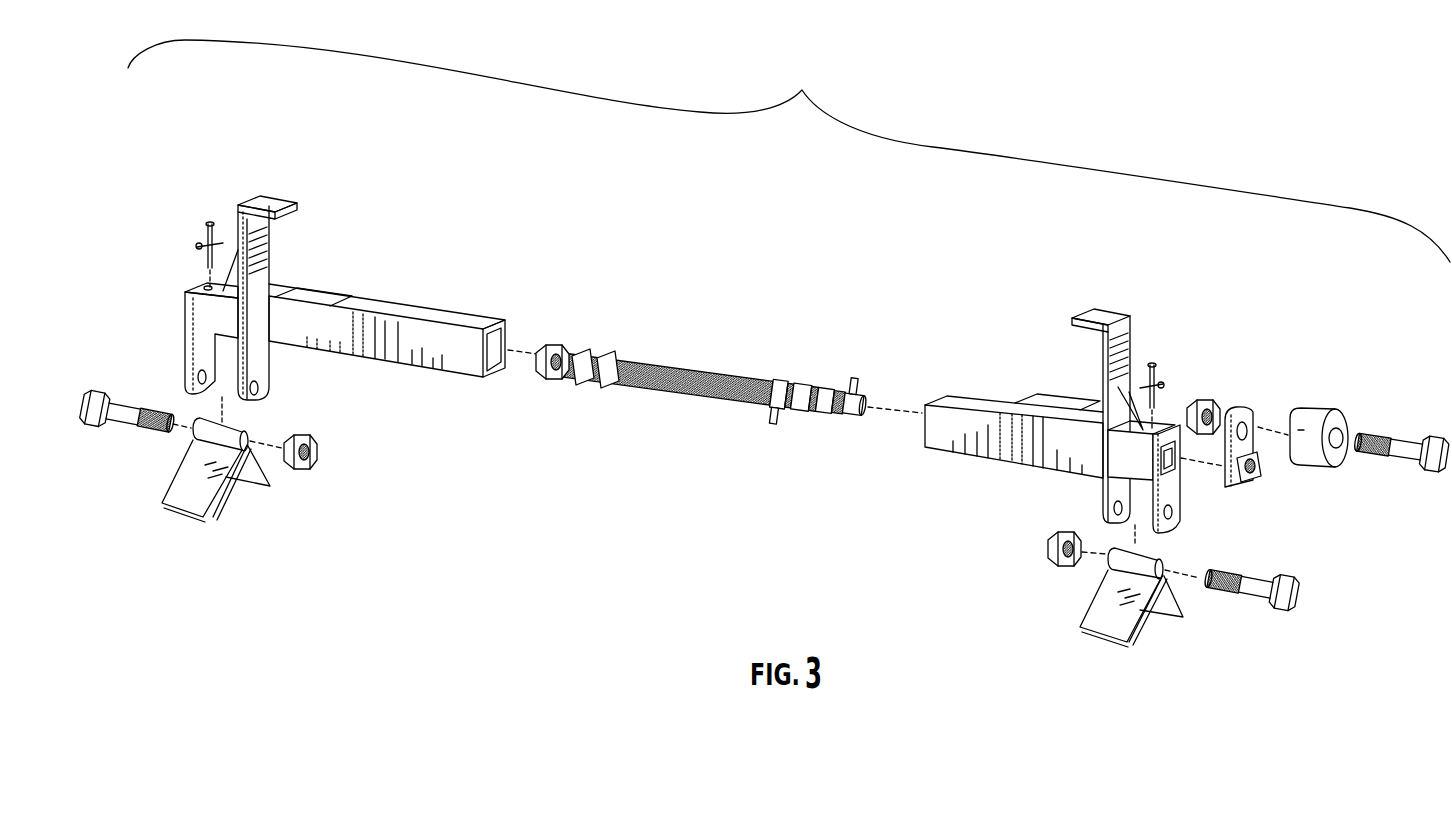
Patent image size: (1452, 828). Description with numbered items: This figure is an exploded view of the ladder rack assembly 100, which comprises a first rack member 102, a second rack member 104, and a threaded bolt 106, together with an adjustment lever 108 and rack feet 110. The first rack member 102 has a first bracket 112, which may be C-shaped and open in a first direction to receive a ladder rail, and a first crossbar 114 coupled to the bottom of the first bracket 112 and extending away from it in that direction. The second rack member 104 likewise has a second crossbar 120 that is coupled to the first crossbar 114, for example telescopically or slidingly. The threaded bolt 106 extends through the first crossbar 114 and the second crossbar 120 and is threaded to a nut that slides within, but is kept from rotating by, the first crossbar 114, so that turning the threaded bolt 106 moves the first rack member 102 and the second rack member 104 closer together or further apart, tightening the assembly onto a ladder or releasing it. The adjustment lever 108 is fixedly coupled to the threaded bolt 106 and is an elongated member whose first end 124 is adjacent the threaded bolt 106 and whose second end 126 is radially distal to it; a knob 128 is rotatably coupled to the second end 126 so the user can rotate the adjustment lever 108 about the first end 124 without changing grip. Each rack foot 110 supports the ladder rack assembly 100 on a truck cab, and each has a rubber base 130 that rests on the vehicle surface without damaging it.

The ladder rack assembly 100 is at (764, 378).
The first rack member 102 is at (388, 189).
The second rack member 104 is at (1028, 317).
The threaded bolt 106 is at (697, 378).
The adjustment lever 108 is at (1250, 389).
The rack foot 110 is at (230, 488).
The first bracket 112 is at (258, 249).
The first crossbar 114 is at (433, 345).
The second crossbar 120 is at (1007, 437).
The first end 124 is at (1248, 477).
The second end 126 is at (1250, 420).
The knob 128 is at (1332, 455).
The rubber base 130 is at (185, 508).